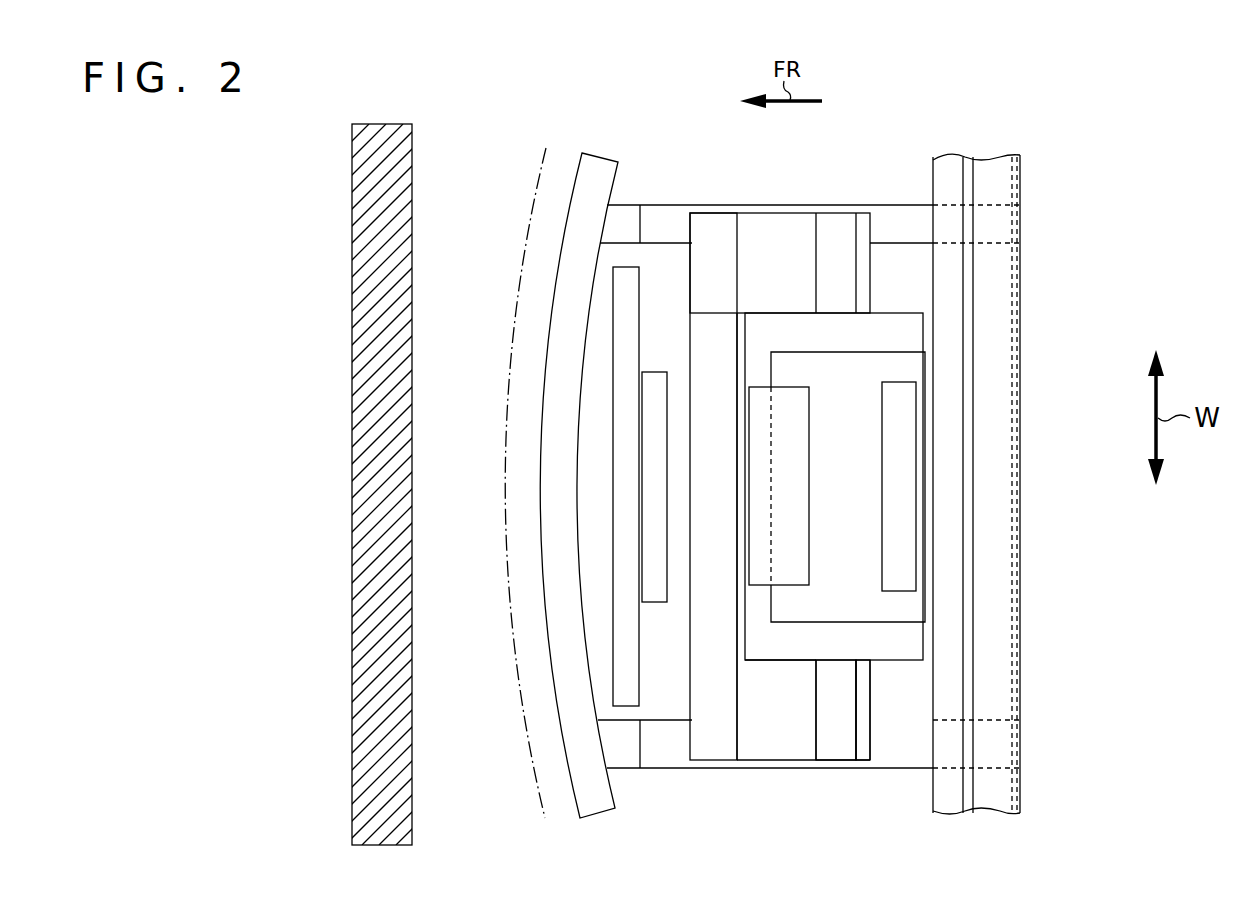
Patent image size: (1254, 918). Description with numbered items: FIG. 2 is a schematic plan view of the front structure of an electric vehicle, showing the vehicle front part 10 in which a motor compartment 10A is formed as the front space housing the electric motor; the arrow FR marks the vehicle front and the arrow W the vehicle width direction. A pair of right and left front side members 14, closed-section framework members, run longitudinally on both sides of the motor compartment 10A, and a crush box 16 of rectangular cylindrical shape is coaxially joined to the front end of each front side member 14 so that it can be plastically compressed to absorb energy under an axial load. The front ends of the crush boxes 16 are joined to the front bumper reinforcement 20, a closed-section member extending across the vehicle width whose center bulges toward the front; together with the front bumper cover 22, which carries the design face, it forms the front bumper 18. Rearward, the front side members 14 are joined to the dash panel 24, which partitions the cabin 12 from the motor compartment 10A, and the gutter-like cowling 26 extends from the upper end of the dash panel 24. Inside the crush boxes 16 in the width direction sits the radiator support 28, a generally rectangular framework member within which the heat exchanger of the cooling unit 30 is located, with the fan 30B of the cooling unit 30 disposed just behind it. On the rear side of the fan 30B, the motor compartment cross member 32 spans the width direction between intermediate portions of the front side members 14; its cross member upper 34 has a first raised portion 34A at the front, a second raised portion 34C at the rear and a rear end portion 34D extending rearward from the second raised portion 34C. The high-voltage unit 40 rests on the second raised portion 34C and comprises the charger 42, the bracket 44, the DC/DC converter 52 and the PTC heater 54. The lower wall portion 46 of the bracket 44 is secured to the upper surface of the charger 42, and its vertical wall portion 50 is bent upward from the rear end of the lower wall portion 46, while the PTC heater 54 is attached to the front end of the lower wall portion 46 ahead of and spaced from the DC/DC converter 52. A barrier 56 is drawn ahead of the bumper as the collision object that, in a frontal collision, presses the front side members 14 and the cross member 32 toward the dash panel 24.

The vehicle front part 10 is at (857, 165).
The motor compartment 10A is at (925, 276).
The cabin 12 is at (1063, 549).
The front side member 14 is at (670, 203).
The crush box 16 is at (624, 202).
The front bumper 18 is at (503, 730).
The front bumper reinforcement 20 is at (543, 625).
The front bumper cover 22 is at (515, 685).
The dash panel 24 is at (1018, 420).
The cowling 26 is at (933, 697).
The radiator support 28 is at (640, 288).
The cooling unit 30 is at (682, 580).
The fan 30B is at (665, 382).
The motor compartment cross member 32 is at (684, 620).
The motor compartment cross member upper 34 is at (786, 752).
The first raised portion 34A is at (718, 750).
The second raised portion 34C is at (838, 750).
The rear end portion 34D is at (865, 745).
The high-voltage unit 40 is at (897, 301).
The charger 42 is at (897, 654).
The bracket 44 is at (897, 630).
The lower wall portion 46 is at (830, 605).
The vertical wall portion 50 is at (925, 486).
The DC/DC converter 52 is at (893, 437).
The PTC heater 54 is at (798, 492).
The barrier 56 is at (414, 179).